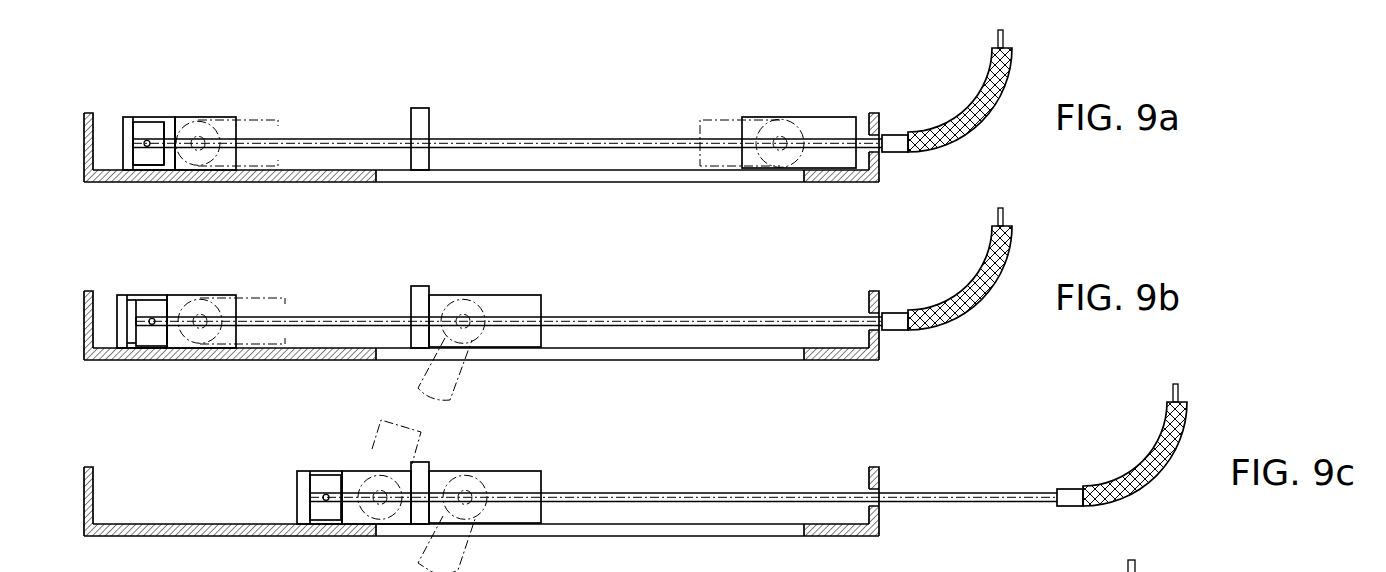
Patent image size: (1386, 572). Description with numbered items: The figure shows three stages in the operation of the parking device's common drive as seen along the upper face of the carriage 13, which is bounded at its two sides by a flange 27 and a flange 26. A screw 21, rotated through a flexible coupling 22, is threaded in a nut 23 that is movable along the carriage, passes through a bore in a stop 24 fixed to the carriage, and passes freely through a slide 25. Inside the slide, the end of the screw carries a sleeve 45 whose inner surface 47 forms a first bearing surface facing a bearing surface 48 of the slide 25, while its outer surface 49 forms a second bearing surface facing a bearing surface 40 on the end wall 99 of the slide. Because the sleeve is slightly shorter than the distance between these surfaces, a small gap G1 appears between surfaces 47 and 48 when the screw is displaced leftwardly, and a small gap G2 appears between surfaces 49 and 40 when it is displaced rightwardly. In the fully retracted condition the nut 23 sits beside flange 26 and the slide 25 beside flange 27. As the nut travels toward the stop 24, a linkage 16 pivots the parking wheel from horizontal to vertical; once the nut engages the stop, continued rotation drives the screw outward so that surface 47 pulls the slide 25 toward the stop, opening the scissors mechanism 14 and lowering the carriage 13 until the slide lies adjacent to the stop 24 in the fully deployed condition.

In FIG. 9A, the carriage 13 is at (342, 178).
In FIG. 9A, the flange 27 is at (84, 142).
In FIG. 9A, the flange 26 is at (884, 121).
In FIG. 9B, the flange 26 is at (873, 302).
In FIG. 9A, the screw 21 is at (637, 140).
In FIG. 9B, the screw 21 is at (509, 290).
In FIG. 9A, the end wall 99 is at (127, 117).
In FIG. 9B, the end wall 99 is at (116, 298).
In FIG. 9C, the end wall 99 is at (285, 497).
In FIG. 9A, the inner surface of sleeve 47 is at (165, 127).
In FIG. 9A, the sleeve 45 is at (150, 165).
In FIG. 9B, the sleeve 45 is at (179, 297).
In FIG. 9C, the sleeve 45 is at (325, 523).
In FIG. 9A, the gap G1 is at (170, 158).
In FIG. 9A, the bearing surface of slide 48 is at (180, 163).
In FIG. 9A, the slide 25 is at (192, 127).
In FIG. 9B, the slide 25 is at (221, 298).
In FIG. 9C, the slide 25 is at (344, 479).
In FIG. 9A, the scissors mechanism 14 is at (270, 127).
In FIG. 9B, the scissors mechanism 14 is at (267, 298).
In FIG. 9C, the scissors mechanism 14 is at (364, 465).
In FIG. 9A, the stop 24 is at (430, 100).
In FIG. 9B, the stop 24 is at (434, 294).
In FIG. 9C, the stop 24 is at (450, 472).
In FIG. 9A, the nut 23 is at (842, 117).
In FIG. 9B, the nut 23 is at (509, 298).
In FIG. 9C, the nut 23 is at (509, 478).
In FIG. 9A, the linkage 16 is at (718, 112).
In FIG. 9B, the linkage 16 is at (493, 349).
In FIG. 9C, the linkage 16 is at (481, 523).
In FIG. 9A, the flexible coupling 22 is at (987, 82).
In FIG. 9B, the bearing surface of end wall 40 is at (142, 278).
In FIG. 9B, the gap G2 is at (116, 371).
In FIG. 9B, the outer surface of sleeve 49 is at (153, 369).